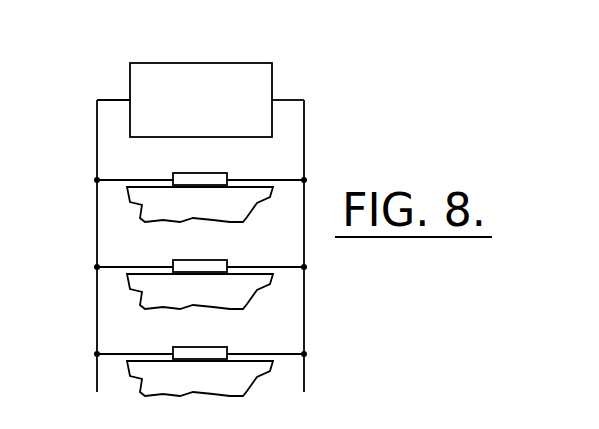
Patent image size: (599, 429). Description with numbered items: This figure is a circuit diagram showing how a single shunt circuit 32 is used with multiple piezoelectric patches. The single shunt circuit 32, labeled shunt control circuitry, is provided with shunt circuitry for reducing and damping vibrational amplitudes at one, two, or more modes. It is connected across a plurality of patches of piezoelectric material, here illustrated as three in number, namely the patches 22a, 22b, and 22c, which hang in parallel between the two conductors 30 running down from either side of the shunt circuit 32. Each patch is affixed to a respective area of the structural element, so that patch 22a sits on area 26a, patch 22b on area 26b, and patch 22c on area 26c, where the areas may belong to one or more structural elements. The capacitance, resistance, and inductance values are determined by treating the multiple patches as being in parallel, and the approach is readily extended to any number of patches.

The bus conductors 30 is at (97, 156).
The single shunt circuit 32 is at (168, 63).
The patch of piezoelectric material 22a is at (198, 173).
The patch of piezoelectric material 22b is at (198, 260).
The patch of piezoelectric material 22c is at (198, 347).
The area of the structural element 26a is at (225, 208).
The area of the structural element 26b is at (225, 295).
The area of the structural element 26c is at (225, 382).